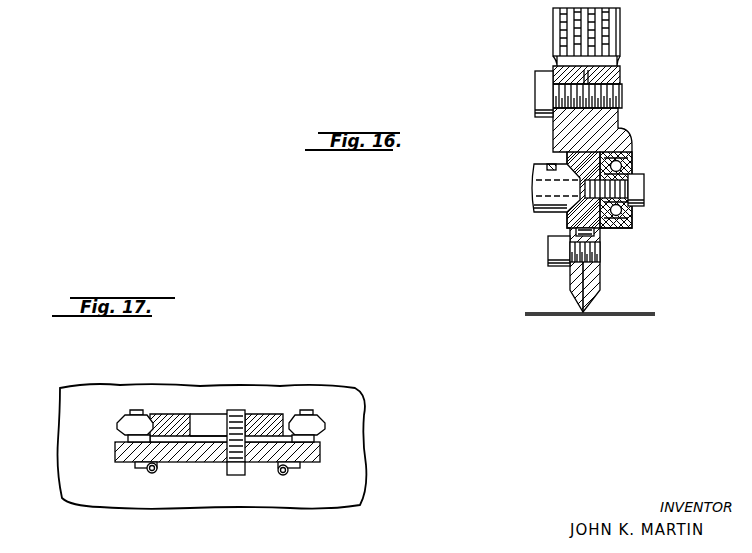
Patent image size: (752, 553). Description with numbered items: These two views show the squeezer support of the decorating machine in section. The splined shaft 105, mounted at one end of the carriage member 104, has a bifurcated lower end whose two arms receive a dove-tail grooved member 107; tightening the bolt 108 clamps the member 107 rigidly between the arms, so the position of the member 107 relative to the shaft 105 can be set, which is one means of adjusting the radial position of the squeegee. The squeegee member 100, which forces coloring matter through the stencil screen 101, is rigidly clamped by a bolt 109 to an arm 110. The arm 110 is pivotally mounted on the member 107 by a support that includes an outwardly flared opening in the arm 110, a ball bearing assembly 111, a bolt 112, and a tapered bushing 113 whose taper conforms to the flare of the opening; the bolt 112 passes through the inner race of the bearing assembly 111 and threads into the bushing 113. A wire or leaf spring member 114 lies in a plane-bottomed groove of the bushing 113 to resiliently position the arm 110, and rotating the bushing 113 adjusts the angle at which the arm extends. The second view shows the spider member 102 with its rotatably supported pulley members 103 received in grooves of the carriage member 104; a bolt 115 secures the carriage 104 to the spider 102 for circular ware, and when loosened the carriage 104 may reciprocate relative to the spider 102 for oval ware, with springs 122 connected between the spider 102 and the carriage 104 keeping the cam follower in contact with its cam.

In FIG. 16, the squeegee member 100 is at (588, 306).
In FIG. 16, the stencil screen 101 is at (620, 315).
In FIG. 17, the spider member 102 is at (320, 452).
In FIG. 17, the pulley members 103 is at (316, 420).
In FIG. 17, the carriage member 104 is at (250, 418).
In FIG. 16, the splined shaft 105 is at (621, 41).
In FIG. 16, the dove-tail grooved member 107 is at (625, 136).
In FIG. 16, the bolt 108 is at (535, 89).
In FIG. 16, the bolt 109 is at (553, 250).
In FIG. 16, the arm 110 is at (598, 236).
In FIG. 16, the ball bearing assembly 111 is at (634, 157).
In FIG. 16, the bolt 112 is at (641, 191).
In FIG. 16, the tapered bushing 113 is at (538, 208).
In FIG. 16, the wire or leaf spring member 114 is at (551, 164).
In FIG. 17, the bolt 115 is at (235, 477).
In FIG. 17, the springs 122 is at (285, 475).